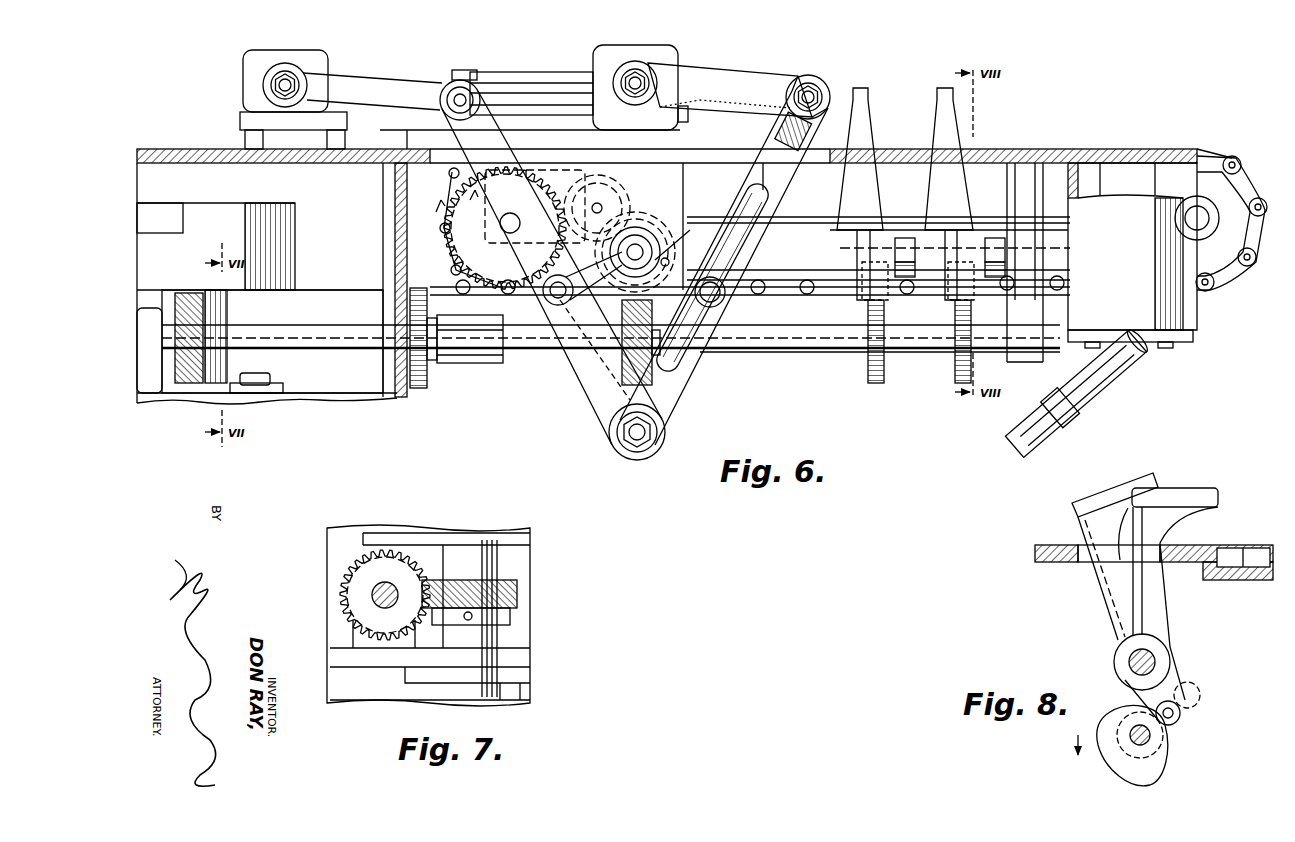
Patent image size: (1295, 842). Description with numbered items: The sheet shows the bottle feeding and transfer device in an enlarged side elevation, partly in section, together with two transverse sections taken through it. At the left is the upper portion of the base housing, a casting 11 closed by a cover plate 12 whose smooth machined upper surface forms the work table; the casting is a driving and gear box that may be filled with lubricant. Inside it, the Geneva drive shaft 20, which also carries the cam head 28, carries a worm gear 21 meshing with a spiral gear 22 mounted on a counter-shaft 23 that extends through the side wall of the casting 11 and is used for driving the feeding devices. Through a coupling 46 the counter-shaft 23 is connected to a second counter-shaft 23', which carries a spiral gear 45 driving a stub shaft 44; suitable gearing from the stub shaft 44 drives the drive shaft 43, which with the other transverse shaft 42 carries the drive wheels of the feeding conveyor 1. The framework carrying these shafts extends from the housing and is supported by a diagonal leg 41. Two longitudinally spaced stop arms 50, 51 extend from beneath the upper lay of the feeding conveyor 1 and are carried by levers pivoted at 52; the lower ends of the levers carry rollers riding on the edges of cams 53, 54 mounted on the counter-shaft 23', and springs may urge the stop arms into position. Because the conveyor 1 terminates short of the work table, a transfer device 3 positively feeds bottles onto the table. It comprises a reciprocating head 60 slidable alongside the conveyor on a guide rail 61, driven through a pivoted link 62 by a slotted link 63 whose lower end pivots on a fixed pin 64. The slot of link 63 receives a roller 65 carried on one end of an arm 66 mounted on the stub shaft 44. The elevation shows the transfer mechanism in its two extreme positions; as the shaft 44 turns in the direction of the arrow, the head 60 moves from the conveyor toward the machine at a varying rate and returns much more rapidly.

In FIG. 6, the feeding conveyor 1 is at (1235, 158).
In FIG. 8, the feeding conveyor 1 is at (1232, 543).
In FIG. 6, the transfer device 3 is at (830, 82).
In FIG. 6, the casting 11 is at (395, 400).
In FIG. 6, the cover plate 12 is at (170, 150).
In FIG. 7, the Geneva drive shaft 20 is at (493, 640).
In FIG. 7, the worm gear 21 is at (517, 590).
In FIG. 6, the spiral gear 22 is at (195, 386).
In FIG. 7, the spiral gear 22 is at (355, 590).
In FIG. 6, the counter-shaft 23 is at (611, 323).
In FIG. 6, the counter-shaft 23' is at (880, 363).
In FIG. 8, the counter-shaft 23' is at (1170, 737).
In FIG. 6, the cam head 28 is at (262, 203).
In FIG. 6, the diagonal leg 41 is at (1012, 425).
In FIG. 6, the transverse shaft 42 is at (1200, 220).
In FIG. 6, the drive shaft 43 is at (500, 225).
In FIG. 6, the stub shaft 44 is at (640, 240).
In FIG. 6, the spiral gear 45 is at (633, 381).
In FIG. 6, the coupling 46 is at (470, 362).
In FIG. 6, the stop arm 50 is at (940, 118).
In FIG. 8, the stop arm 50 is at (1185, 490).
In FIG. 6, the stop arm 51 is at (868, 112).
In FIG. 6, the pivot 52 is at (1002, 257).
In FIG. 8, the pivot 52 is at (1128, 660).
In FIG. 6, the cam 53 is at (955, 375).
In FIG. 8, the cam 53 is at (1120, 765).
In FIG. 6, the cam 54 is at (870, 376).
In FIG. 6, the reciprocating head 60 is at (660, 52).
In FIG. 6, the guide rail 61 is at (690, 115).
In FIG. 6, the pivoted link 62 is at (760, 80).
In FIG. 6, the slotted link 63 is at (593, 385).
In FIG. 6, the fixed pin 64 is at (637, 440).
In FIG. 6, the roller 65 is at (740, 300).
In FIG. 6, the arm 66 is at (712, 247).